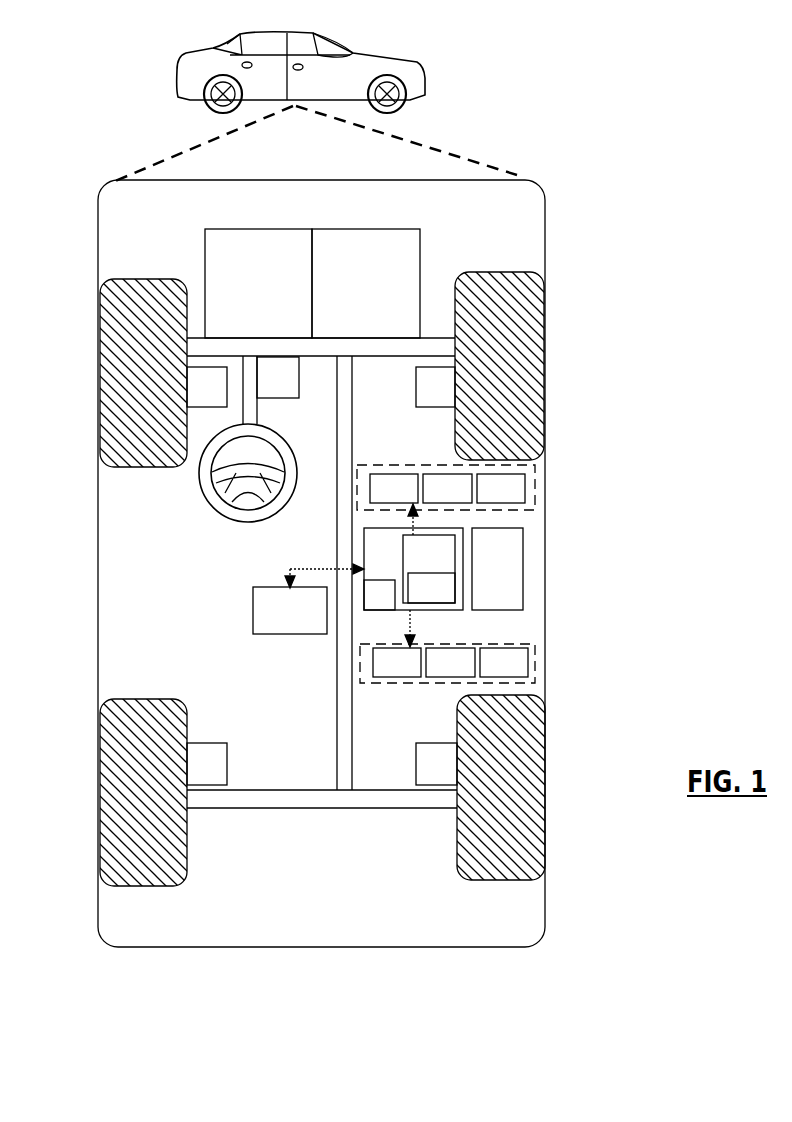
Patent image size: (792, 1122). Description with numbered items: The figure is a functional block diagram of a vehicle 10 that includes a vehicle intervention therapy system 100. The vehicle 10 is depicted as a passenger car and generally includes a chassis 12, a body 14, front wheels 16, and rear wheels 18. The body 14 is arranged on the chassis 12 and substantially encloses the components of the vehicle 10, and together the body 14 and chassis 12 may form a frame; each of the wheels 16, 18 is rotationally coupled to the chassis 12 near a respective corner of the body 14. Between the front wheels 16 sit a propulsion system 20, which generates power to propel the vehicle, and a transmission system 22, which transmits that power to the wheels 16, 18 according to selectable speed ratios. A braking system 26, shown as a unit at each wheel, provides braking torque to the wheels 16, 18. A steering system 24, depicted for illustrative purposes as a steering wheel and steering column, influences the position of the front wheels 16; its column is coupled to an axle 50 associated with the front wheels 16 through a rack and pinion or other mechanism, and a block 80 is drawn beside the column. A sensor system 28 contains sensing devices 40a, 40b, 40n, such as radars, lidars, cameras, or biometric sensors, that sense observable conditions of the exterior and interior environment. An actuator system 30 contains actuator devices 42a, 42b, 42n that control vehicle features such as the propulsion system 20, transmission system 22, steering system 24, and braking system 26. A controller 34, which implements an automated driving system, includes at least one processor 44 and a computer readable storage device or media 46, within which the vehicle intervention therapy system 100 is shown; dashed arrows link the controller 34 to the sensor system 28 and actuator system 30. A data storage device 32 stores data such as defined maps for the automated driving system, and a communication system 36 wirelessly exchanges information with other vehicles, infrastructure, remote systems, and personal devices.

The vehicle 10 is at (182, 86).
The chassis 12 is at (337, 723).
The body 14 is at (98, 563).
The front wheels 16 is at (142, 280).
The rear wheels 18 is at (162, 885).
The propulsion system 20 is at (258, 283).
The transmission system 22 is at (366, 283).
The steering system 24 is at (178, 502).
The braking system 26 is at (322, 576).
The sensor system 28 is at (387, 463).
The actuator system 30 is at (402, 685).
The data storage device 32 is at (290, 610).
The controller 34 is at (413, 569).
The communication system 36 is at (497, 569).
The sensing device 40a is at (394, 488).
The sensing device 40b is at (447, 488).
The sensing device 40n is at (501, 488).
The actuator device 42a is at (397, 662).
The actuator device 42b is at (450, 662).
The actuator device 42n is at (504, 662).
The processor 44 is at (379, 595).
The computer readable storage device or media 46 is at (429, 569).
The axle 50 is at (387, 357).
The steering module 80 is at (278, 377).
The vehicle intervention therapy system 100 is at (431, 588).